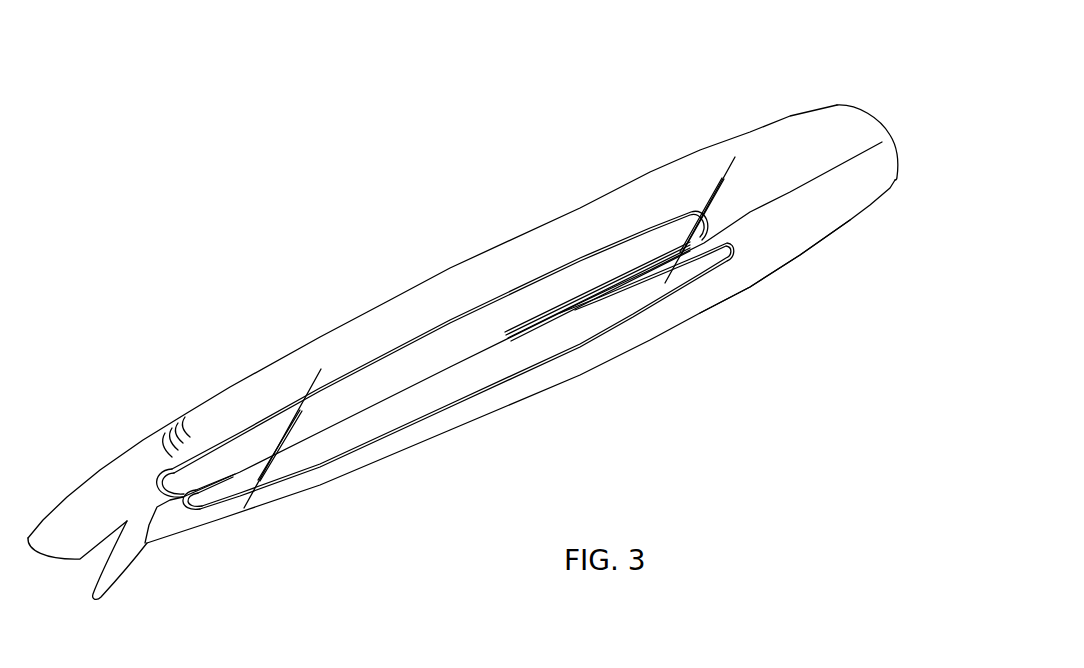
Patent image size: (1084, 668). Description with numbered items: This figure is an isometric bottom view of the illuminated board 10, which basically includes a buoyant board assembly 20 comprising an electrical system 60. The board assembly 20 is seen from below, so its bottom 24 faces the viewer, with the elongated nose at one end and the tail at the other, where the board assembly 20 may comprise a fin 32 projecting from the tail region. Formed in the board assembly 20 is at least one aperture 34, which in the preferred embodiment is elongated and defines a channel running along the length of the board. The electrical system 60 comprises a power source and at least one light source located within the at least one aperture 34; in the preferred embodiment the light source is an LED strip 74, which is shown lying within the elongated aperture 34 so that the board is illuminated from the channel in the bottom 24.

The illuminated board 10 is at (758, 93).
The board assembly 20 is at (673, 152).
The bottom 24 is at (782, 248).
The fin 32 is at (125, 572).
The aperture 34 is at (608, 242).
The electrical system 60 is at (453, 315).
The LED strip 74 is at (505, 295).